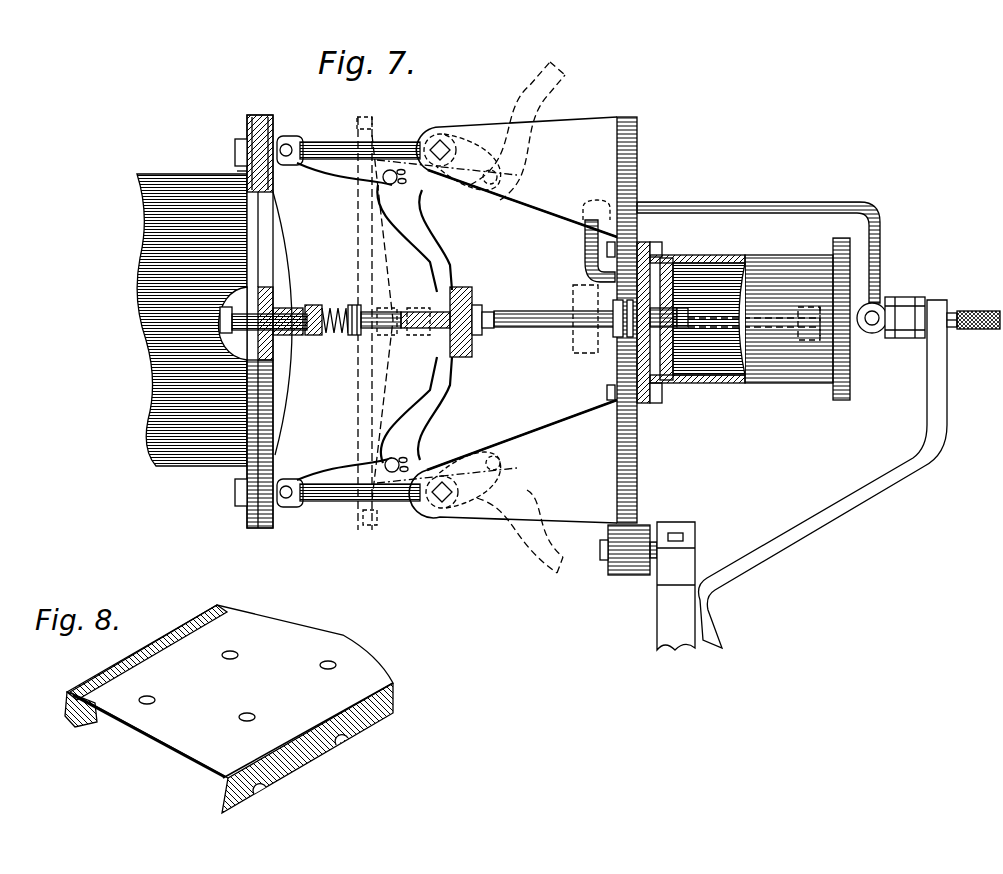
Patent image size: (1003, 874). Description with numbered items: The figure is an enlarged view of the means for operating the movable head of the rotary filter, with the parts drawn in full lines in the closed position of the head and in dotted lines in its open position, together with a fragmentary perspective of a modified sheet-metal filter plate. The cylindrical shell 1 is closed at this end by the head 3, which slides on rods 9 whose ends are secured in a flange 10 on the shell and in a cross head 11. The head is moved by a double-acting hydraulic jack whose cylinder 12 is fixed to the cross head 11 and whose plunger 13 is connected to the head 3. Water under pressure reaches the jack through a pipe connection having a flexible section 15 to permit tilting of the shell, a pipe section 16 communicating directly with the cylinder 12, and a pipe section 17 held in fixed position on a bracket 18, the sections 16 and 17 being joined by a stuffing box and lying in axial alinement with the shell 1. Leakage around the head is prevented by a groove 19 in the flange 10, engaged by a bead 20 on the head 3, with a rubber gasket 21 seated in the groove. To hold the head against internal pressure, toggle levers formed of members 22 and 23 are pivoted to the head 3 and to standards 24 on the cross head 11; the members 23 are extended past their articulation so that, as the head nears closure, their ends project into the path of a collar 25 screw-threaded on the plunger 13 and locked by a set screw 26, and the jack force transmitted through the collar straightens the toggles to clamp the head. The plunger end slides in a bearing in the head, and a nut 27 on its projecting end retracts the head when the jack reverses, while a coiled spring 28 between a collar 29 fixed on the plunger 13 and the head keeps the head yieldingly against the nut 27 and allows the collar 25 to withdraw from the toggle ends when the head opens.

The cylindrical shell 1 is at (178, 472).
The head 3 is at (277, 124).
The rods 9 is at (365, 150).
The flange 10 is at (243, 172).
The cross head 11 is at (635, 137).
The cylinder 12 is at (768, 385).
The plunger 13 is at (541, 324).
The flexible section 15 is at (990, 302).
The pipe section 16 is at (880, 254).
The pipe section 17 is at (945, 325).
The bracket 18 is at (920, 462).
The groove 19 is at (252, 117).
The flange or bead 20 is at (268, 118).
The gasket 21 is at (245, 150).
The toggle member 22 is at (338, 174).
The toggle member 23 is at (410, 140).
The standards 24 is at (578, 132).
The collar 25 is at (460, 294).
The set screw 26 is at (480, 303).
The nut 27 is at (218, 320).
The coiled spring 28 is at (336, 336).
The collar 29 is at (360, 300).